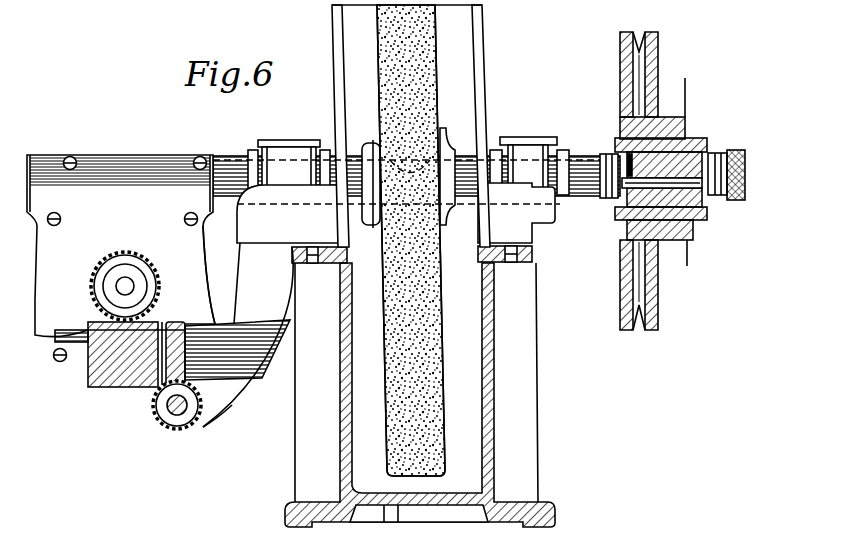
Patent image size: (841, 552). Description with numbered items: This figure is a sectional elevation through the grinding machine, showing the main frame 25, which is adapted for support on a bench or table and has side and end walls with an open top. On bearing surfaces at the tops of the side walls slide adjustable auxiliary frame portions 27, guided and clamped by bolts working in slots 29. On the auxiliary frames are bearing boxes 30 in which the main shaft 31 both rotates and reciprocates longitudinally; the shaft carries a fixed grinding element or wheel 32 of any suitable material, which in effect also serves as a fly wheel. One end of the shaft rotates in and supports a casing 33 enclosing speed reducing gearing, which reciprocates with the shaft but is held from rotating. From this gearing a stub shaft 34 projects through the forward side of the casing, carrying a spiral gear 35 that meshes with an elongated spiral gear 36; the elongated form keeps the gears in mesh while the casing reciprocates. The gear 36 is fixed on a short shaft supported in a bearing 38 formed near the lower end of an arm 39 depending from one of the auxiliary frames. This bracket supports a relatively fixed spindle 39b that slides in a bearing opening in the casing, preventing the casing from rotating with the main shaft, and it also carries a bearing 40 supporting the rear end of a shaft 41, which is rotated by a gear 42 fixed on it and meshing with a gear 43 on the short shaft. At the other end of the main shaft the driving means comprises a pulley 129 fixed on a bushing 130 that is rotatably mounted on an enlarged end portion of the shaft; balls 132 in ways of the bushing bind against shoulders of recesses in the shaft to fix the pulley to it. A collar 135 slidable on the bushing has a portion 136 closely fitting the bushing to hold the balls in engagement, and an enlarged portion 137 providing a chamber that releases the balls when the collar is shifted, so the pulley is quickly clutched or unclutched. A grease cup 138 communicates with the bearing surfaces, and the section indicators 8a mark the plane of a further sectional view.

The main frame 25 is at (520, 384).
The auxiliary frame portions 27 is at (327, 224).
The slots 29 is at (522, 263).
The bearing boxes 30 is at (291, 146).
The main shaft 31 is at (590, 204).
The grinding element or wheel 32 is at (441, 418).
The casing 33 is at (115, 157).
The stub shaft 34 is at (117, 285).
The spiral gear 35 is at (92, 266).
The elongated spiral gear 36 is at (96, 376).
The bearing 38 is at (252, 388).
The arm 39 is at (248, 326).
The spindle 39b is at (57, 334).
The bearing 40 is at (209, 413).
The shaft 41 is at (166, 406).
The gear 42 is at (171, 423).
The gear 43 is at (176, 322).
The pulley 129 is at (622, 46).
The bushing 130 is at (706, 132).
The balls 132 is at (694, 138).
The collar 135 is at (665, 118).
The portion of collar 136 is at (694, 231).
The lower pulley web 137 is at (658, 276).
The grease cup 138 is at (733, 203).
The section line 8a is at (707, 100).